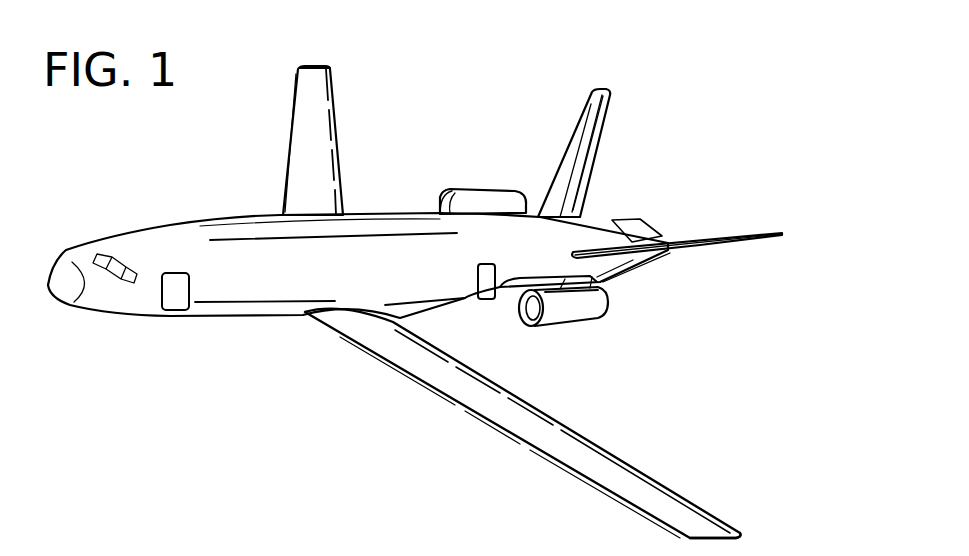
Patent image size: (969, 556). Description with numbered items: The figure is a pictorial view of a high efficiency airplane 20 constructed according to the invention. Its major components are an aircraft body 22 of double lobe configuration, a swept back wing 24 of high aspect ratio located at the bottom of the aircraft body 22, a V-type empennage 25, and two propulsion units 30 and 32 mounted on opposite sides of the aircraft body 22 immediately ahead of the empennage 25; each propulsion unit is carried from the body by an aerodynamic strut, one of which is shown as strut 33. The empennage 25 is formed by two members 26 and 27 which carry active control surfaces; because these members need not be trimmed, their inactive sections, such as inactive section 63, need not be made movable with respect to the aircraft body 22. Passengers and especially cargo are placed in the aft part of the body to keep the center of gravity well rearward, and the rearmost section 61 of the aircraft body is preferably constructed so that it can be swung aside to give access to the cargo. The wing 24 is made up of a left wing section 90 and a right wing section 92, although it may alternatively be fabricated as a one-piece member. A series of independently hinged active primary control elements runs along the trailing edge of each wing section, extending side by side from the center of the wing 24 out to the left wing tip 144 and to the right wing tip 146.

The airplane 20 is at (190, 182).
The aircraft body 22 is at (187, 231).
The swept back wing 24 is at (573, 432).
The V-type empennage 25 is at (604, 144).
The empennage member 26 is at (713, 243).
The empennage member 27 is at (565, 147).
The propulsion unit 30 is at (598, 312).
The propulsion unit 32 is at (470, 190).
The aerodynamic strut 33 is at (511, 308).
The rearmost section 61 is at (637, 228).
The inactive section 63 is at (566, 172).
The left wing section 90 is at (473, 405).
The right wing section 92 is at (300, 160).
The left wing tip 144 is at (738, 540).
The right wing tip 146 is at (322, 68).